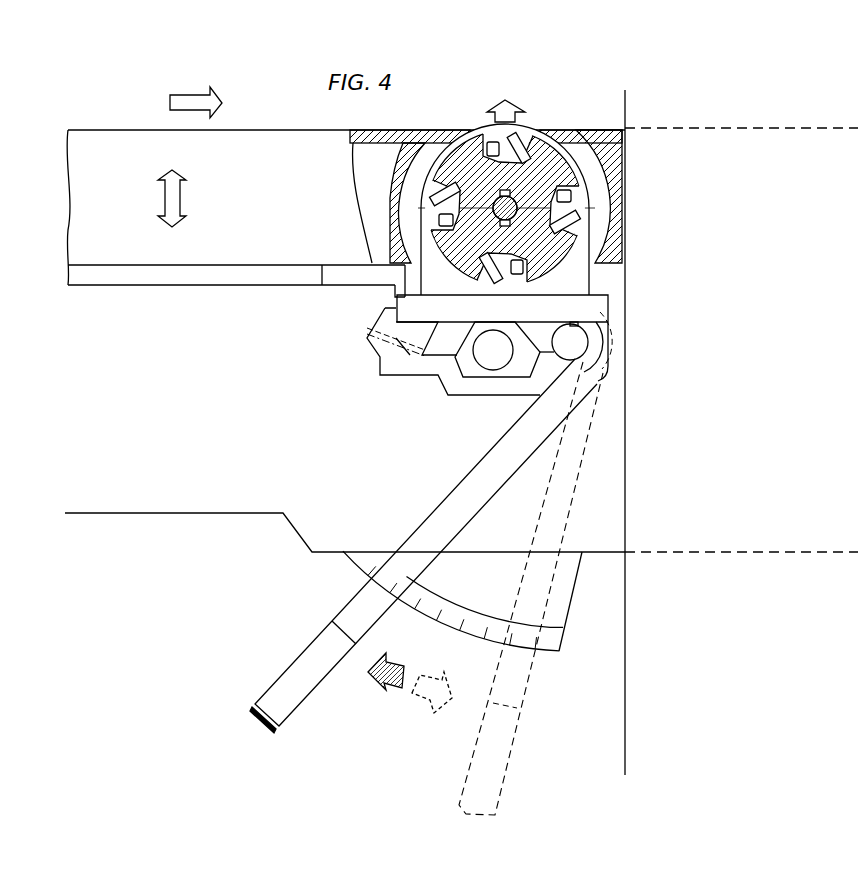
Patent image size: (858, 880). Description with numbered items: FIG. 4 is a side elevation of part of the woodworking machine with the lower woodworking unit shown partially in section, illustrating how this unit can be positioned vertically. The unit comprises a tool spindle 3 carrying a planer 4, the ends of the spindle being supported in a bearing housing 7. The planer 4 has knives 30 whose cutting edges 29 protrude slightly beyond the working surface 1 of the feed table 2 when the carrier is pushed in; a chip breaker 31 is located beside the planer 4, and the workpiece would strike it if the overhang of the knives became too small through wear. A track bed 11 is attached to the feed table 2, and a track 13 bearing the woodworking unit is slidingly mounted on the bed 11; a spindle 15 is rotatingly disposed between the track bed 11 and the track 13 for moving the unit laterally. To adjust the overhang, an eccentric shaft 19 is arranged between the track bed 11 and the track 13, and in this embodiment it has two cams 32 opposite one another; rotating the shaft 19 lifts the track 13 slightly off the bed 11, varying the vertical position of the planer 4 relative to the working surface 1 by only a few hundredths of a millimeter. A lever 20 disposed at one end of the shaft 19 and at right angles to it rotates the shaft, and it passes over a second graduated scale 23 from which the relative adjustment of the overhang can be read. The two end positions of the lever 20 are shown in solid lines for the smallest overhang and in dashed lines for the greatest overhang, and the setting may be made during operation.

The working surface 1 is at (246, 130).
The feed table 2 is at (108, 243).
The tool spindle 3 is at (506, 169).
The planer 4 is at (518, 123).
The bearing housing 7 is at (623, 275).
The track bed 11 is at (475, 388).
The track 13 is at (598, 306).
The spindle 15 is at (485, 356).
The eccentric shaft 19 is at (577, 343).
The lever 20 is at (548, 420).
The second graduated scale 23 is at (440, 612).
The cutting edge 29 is at (483, 103).
The knife 30 is at (524, 107).
The chip breaker 31 is at (396, 148).
The cam 32 is at (566, 342).